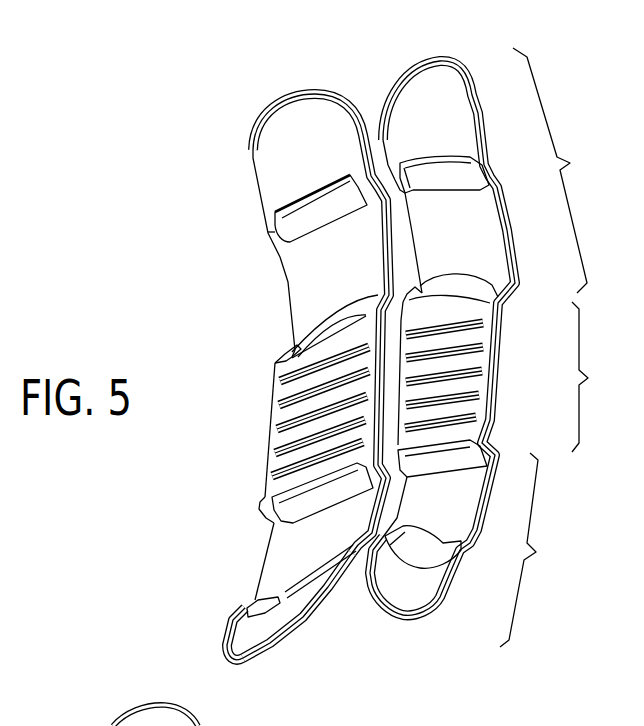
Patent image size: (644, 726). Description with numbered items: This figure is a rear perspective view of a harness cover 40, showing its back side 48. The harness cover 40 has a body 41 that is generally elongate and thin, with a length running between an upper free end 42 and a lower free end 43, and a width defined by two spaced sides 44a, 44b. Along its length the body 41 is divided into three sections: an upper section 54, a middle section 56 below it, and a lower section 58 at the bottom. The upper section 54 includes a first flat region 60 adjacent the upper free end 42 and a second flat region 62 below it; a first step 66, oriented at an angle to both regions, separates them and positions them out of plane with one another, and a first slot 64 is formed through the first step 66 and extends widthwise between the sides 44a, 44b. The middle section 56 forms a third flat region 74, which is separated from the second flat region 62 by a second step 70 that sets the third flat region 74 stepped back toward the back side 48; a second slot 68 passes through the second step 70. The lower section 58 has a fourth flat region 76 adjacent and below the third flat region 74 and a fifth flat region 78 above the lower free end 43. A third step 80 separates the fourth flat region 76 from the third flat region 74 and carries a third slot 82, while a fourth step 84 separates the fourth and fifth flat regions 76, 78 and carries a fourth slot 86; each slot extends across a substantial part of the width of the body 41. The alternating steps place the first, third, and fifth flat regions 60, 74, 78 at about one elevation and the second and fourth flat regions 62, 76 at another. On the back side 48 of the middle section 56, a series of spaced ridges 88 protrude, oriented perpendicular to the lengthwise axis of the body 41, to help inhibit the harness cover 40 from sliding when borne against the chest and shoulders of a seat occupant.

The harness cover 40 is at (298, 96).
The body 41 is at (489, 131).
The upper free end 42 is at (430, 63).
The lower free end 43 is at (307, 637).
The side 44a is at (393, 240).
The side 44b is at (278, 249).
The back side 48 is at (444, 314).
The upper section 54 is at (558, 170).
The middle section 56 is at (595, 377).
The lower section 58 is at (474, 550).
The first flat region 60 is at (273, 132).
The second flat region 62 is at (328, 269).
The first slot 64 is at (300, 212).
The first step 66 is at (266, 241).
The second slot 68 is at (328, 317).
The second step 70 is at (293, 350).
The third flat region 74 is at (278, 393).
The fourth flat region 76 is at (287, 555).
The fifth flat region 78 is at (253, 642).
The third step 80 is at (273, 521).
The third slot 82 is at (300, 500).
The fourth step 84 is at (246, 609).
The fourth slot 86 is at (278, 593).
The ridges 88 is at (275, 430).